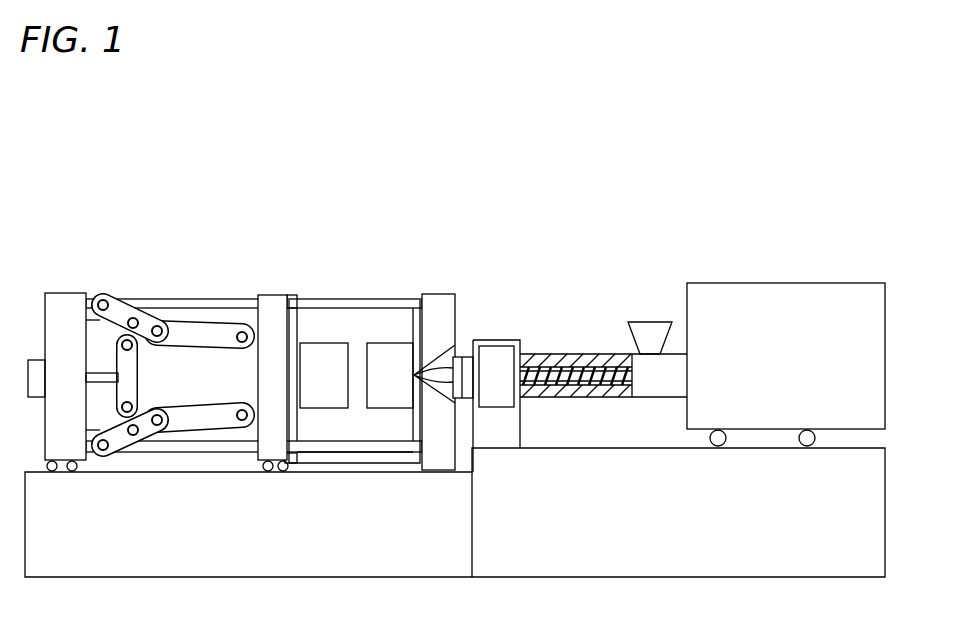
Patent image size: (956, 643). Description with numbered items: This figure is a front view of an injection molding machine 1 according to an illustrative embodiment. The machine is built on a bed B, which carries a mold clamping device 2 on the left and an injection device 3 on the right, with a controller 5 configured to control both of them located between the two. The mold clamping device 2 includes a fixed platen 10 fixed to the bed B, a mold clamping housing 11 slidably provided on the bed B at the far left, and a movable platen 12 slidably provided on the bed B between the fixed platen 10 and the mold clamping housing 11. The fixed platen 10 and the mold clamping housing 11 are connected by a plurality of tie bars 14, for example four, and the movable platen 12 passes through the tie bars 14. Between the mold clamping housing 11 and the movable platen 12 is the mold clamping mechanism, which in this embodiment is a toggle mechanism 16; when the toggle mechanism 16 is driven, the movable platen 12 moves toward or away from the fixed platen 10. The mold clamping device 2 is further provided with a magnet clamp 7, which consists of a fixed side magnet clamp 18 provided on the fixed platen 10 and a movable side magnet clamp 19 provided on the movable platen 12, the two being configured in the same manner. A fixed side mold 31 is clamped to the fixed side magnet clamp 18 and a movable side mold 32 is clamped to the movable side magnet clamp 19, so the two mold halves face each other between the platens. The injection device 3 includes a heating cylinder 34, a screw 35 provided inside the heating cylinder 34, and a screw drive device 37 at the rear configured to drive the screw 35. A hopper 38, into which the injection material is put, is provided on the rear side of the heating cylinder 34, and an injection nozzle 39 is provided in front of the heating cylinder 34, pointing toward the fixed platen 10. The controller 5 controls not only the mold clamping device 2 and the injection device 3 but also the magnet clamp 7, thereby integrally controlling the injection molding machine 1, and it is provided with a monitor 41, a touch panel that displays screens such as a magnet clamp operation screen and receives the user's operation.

The injection molding machine 1 is at (806, 122).
The mold clamping device 2 is at (442, 175).
The injection device 3 is at (737, 180).
The controller 5 is at (497, 340).
The magnet clamp 7 is at (286, 200).
The fixed platen 10 is at (440, 294).
The mold clamping housing 11 is at (58, 293).
The movable platen 12 is at (265, 295).
The tie bars 14 is at (193, 298).
The toggle mechanism 16 is at (150, 292).
The fixed side magnet clamp 18 is at (402, 310).
The movable side magnet clamp 19 is at (306, 323).
The fixed side mold 31 is at (376, 343).
The movable side mold 32 is at (340, 343).
The heating cylinder 34 is at (590, 354).
The screw 35 is at (556, 354).
The screw drive device 37 is at (848, 283).
The hopper 38 is at (652, 322).
The injection nozzle 39 is at (456, 345).
The monitor 41 is at (512, 400).
The bed B is at (342, 572).